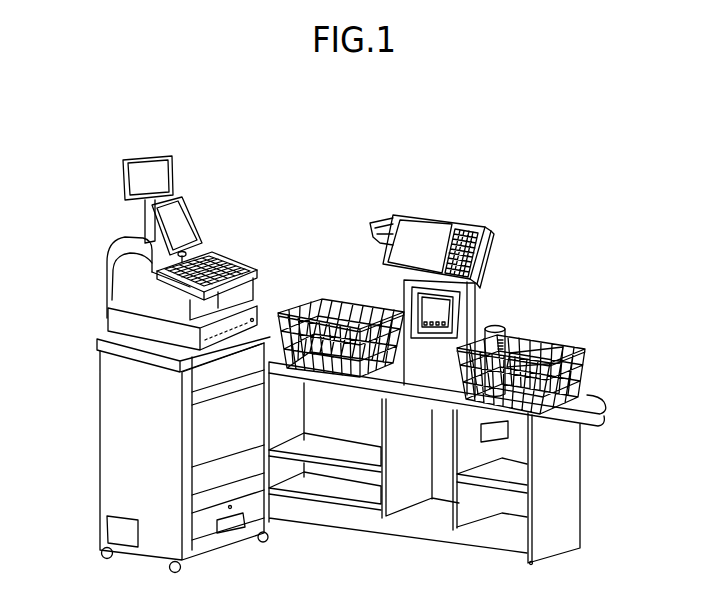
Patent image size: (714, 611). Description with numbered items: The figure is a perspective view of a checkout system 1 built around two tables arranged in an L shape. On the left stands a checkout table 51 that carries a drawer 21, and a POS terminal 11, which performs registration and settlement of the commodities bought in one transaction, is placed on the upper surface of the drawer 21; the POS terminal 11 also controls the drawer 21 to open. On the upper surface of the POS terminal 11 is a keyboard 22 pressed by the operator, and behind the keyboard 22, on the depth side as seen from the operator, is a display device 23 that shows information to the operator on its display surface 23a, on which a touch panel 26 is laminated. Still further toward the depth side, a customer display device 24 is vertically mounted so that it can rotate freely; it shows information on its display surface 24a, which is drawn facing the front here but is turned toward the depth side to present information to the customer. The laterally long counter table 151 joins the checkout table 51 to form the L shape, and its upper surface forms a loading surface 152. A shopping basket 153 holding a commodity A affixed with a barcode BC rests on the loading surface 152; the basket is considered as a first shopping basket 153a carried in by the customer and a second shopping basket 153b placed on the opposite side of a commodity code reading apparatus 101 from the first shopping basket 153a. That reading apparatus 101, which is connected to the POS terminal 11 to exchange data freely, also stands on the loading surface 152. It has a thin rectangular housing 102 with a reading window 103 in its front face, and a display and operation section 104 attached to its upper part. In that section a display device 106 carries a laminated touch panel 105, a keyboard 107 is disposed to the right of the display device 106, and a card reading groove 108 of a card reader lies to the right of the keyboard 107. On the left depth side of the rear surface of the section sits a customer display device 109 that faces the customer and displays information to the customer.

The checkout system 1 is at (64, 171).
The POS terminal 11 is at (81, 256).
The drawer 21 is at (115, 322).
The keyboard 22 is at (237, 260).
The display device 23 is at (182, 198).
The display surface 23a is at (192, 233).
The customer display device 24 is at (148, 157).
The display surface 24a is at (137, 163).
The touch panel 26 is at (147, 222).
The checkout table 51 is at (115, 440).
The commodity code reading apparatus 101 is at (371, 135).
The housing 102 is at (422, 352).
The reading window 103 is at (427, 310).
The display and operation section 104 is at (408, 210).
The touch panel 105 is at (430, 223).
The display device 106 is at (452, 227).
The keyboard 107 is at (480, 227).
The card reading groove 108 is at (487, 230).
The customer display device 109 is at (378, 223).
The counter table 151 is at (572, 500).
The loading surface 152 is at (592, 398).
The shopping basket 153 is at (592, 328).
The first shopping basket 153a is at (587, 350).
The second shopping basket 153b is at (308, 302).
The commodity A is at (497, 328).
The barcode BC is at (503, 340).